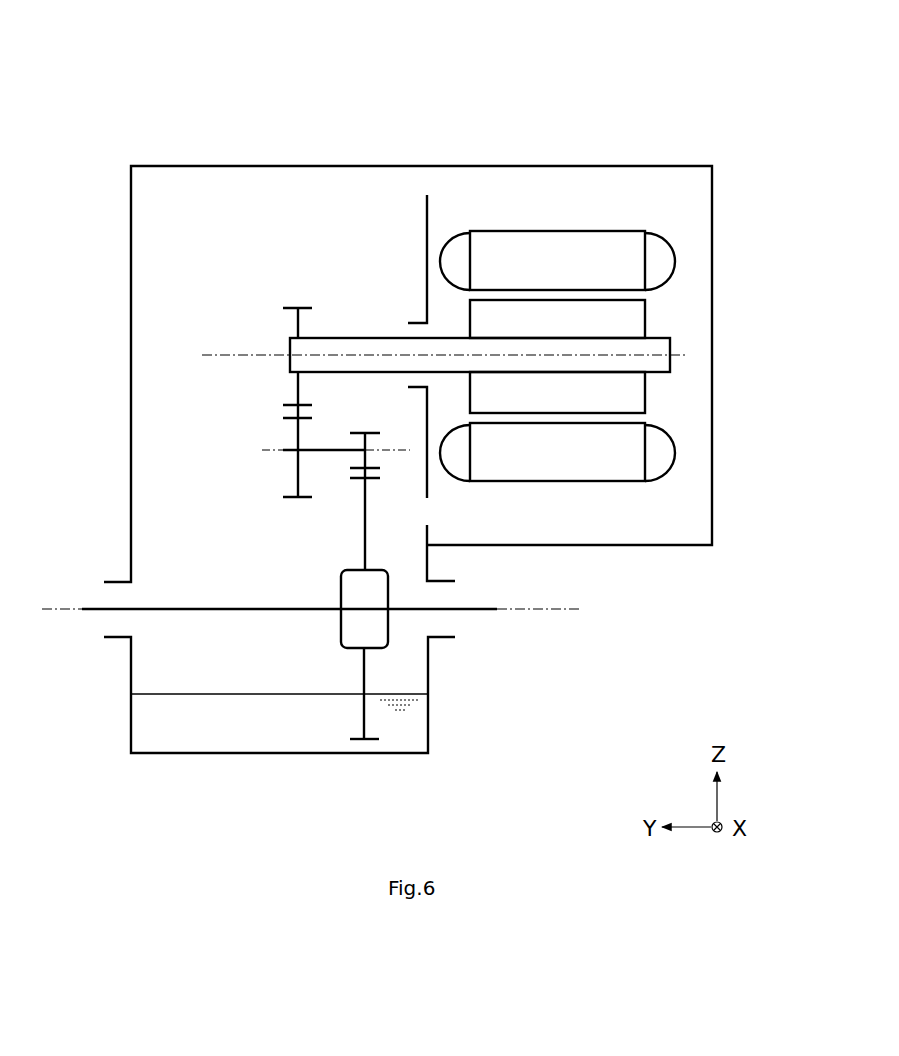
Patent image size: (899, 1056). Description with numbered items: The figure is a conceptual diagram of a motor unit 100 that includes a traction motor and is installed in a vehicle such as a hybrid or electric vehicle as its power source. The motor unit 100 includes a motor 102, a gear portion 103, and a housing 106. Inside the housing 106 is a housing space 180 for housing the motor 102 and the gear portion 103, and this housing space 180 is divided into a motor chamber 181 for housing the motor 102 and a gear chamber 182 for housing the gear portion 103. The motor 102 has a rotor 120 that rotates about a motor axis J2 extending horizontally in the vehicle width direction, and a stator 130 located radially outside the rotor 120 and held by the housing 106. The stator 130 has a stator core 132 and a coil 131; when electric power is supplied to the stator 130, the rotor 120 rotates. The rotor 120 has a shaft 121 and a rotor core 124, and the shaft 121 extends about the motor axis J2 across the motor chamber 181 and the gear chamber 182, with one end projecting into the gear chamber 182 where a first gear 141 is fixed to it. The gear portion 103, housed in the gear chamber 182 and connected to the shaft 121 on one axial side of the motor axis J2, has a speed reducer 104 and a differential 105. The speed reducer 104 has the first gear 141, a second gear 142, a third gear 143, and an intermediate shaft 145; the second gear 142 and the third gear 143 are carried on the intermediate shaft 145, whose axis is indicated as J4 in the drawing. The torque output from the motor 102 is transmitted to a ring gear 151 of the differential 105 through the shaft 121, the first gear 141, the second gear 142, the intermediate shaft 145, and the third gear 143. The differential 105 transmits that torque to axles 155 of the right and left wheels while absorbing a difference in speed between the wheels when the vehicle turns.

The motor unit 100 is at (126, 90).
The motor 102 is at (672, 223).
The gear portion 103 is at (188, 302).
The speed reducer 104 is at (270, 495).
The differential 105 is at (340, 656).
The housing 106 is at (686, 164).
The rotor 120 is at (652, 310).
The shaft 121 is at (370, 336).
The rotor core 124 is at (630, 320).
The stator 130 is at (678, 244).
The coil 131 is at (672, 278).
The stator core 132 is at (612, 245).
The first gear 141 is at (298, 306).
The second gear 142 is at (288, 502).
The third gear 143 is at (357, 431).
The intermediate shaft 145 is at (335, 456).
The ring gear 151 is at (357, 742).
The axles 155 is at (476, 613).
The housing space 180 is at (568, 198).
The motor chamber 181 is at (524, 193).
The gear chamber 182 is at (290, 190).
The motor axis J2 is at (678, 357).
The intermediate axis J4 is at (276, 450).